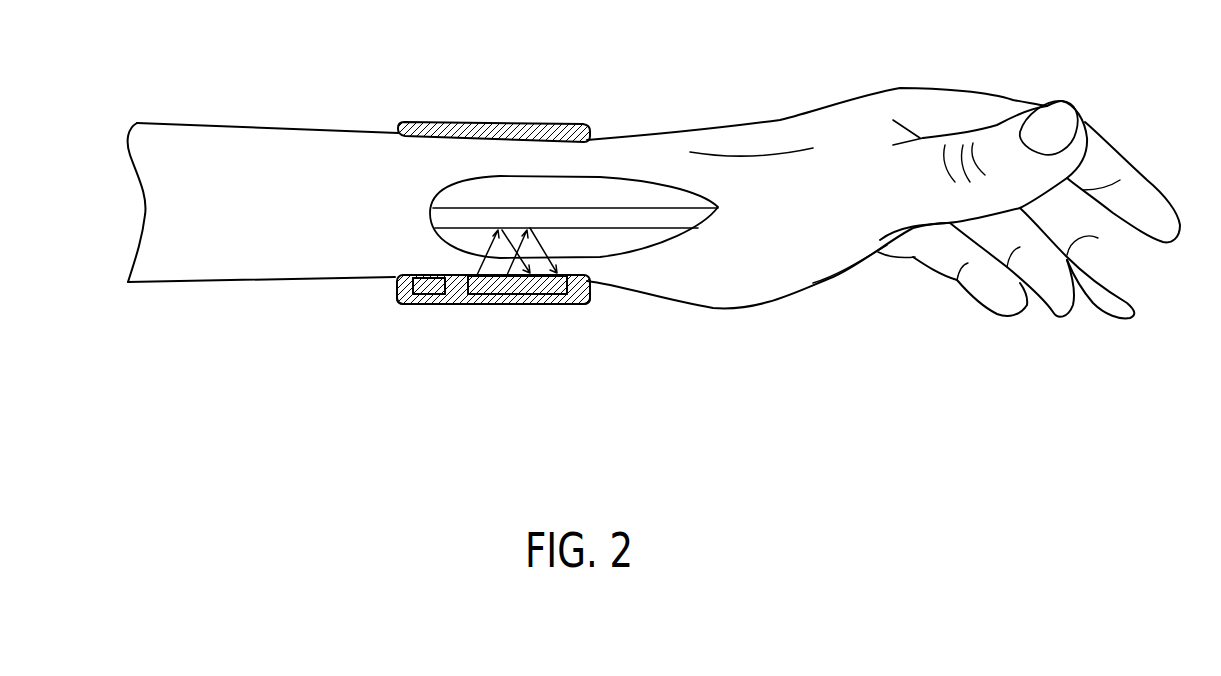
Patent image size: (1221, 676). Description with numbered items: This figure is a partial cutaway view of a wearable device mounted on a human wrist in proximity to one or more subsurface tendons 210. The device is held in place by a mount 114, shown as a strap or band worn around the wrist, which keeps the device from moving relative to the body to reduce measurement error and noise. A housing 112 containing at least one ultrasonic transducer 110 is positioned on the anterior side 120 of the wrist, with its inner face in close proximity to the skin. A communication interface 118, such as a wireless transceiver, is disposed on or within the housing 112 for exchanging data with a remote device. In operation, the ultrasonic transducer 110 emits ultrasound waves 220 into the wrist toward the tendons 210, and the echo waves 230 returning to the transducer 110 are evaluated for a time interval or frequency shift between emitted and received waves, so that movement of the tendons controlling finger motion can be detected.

The ultrasonic transducer 110 is at (540, 295).
The housing 112 is at (523, 305).
The mount 114 is at (458, 123).
The communication interface 118 is at (400, 298).
The anterior side 120 is at (643, 290).
The subsurface tendon 210 is at (660, 208).
The ultrasound waves 220 is at (466, 282).
The echo waves 230 is at (577, 293).